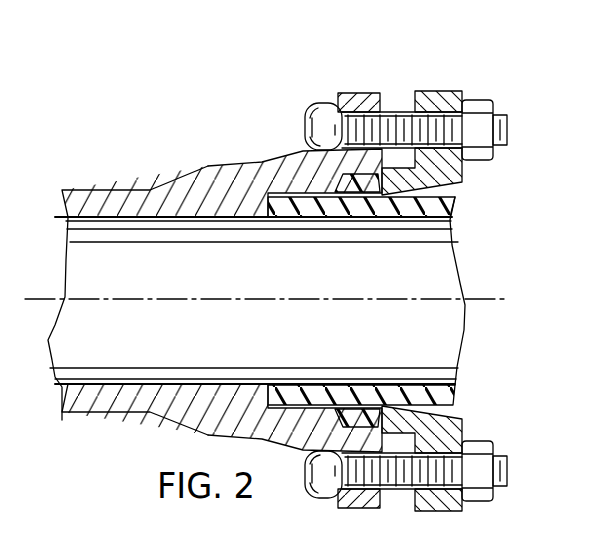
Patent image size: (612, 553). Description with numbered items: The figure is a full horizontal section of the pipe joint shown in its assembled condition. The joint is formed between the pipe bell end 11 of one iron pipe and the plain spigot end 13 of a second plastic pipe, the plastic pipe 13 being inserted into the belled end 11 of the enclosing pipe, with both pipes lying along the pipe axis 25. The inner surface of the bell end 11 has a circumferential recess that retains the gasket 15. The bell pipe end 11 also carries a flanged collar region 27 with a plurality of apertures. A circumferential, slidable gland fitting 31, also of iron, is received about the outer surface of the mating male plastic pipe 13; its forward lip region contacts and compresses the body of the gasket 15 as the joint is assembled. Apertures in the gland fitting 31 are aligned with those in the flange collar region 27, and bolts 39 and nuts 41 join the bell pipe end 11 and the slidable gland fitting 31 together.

The pipe bell end 11 is at (189, 156).
The plain spigot end 13 is at (463, 200).
The gasket 15 is at (342, 177).
The pipe axis 25 is at (492, 298).
The flanged collar region 27 is at (362, 93).
The slidable gland fitting 31 is at (441, 90).
The bolts 39 is at (391, 112).
The nuts 41 is at (482, 100).